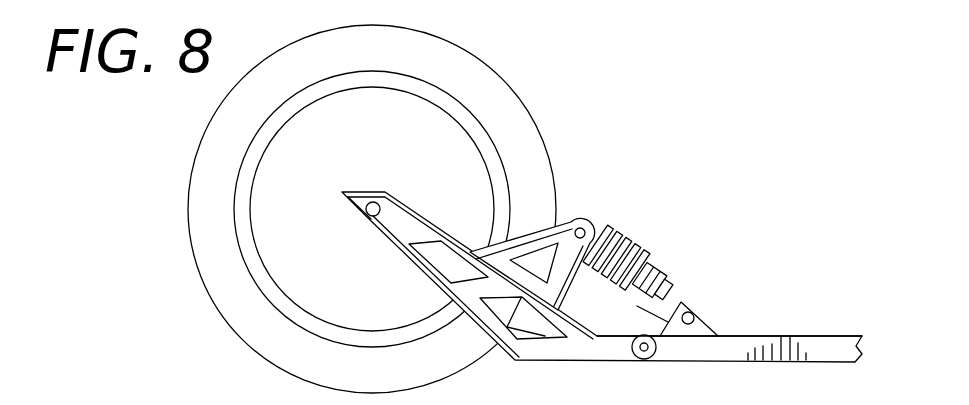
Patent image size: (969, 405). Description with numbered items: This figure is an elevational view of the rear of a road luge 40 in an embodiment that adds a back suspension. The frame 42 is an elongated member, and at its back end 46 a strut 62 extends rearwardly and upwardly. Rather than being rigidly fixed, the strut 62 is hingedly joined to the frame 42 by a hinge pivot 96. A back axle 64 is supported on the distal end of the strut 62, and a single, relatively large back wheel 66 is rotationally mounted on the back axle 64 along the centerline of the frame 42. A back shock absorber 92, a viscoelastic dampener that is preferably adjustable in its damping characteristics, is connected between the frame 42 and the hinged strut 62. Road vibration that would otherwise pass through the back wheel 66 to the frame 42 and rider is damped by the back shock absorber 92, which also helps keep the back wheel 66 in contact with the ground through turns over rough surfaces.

The road luge 40 is at (812, 244).
The frame 42 is at (832, 350).
The back end 46 is at (727, 345).
The strut 62 is at (405, 237).
The back axle 64 is at (365, 214).
The back wheel 66 is at (508, 88).
The back shock absorber 92 is at (640, 253).
The hinge pivot 96 is at (644, 359).